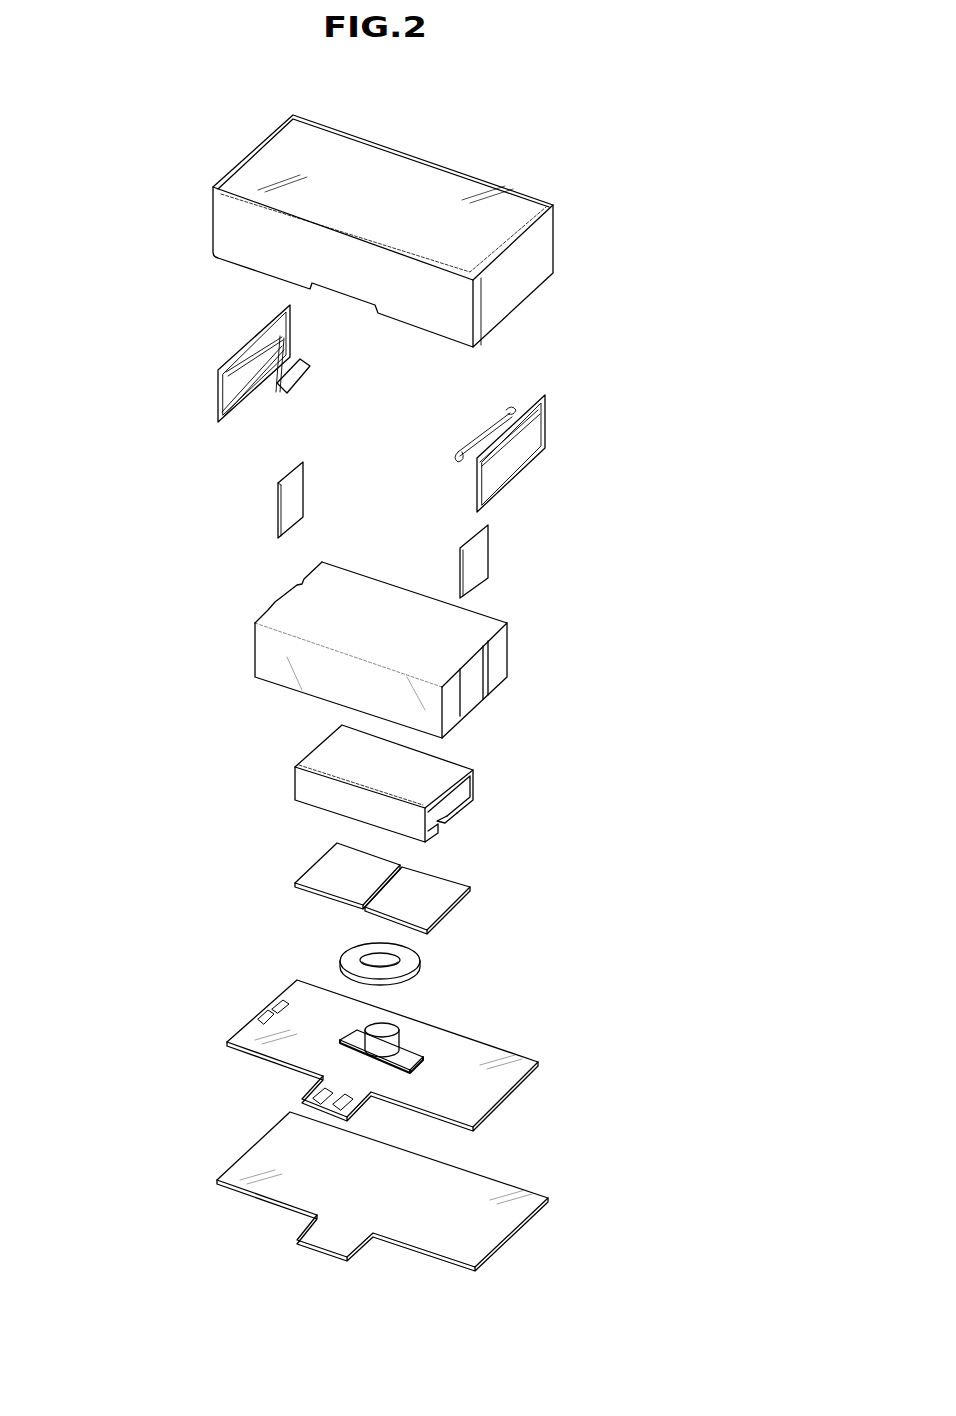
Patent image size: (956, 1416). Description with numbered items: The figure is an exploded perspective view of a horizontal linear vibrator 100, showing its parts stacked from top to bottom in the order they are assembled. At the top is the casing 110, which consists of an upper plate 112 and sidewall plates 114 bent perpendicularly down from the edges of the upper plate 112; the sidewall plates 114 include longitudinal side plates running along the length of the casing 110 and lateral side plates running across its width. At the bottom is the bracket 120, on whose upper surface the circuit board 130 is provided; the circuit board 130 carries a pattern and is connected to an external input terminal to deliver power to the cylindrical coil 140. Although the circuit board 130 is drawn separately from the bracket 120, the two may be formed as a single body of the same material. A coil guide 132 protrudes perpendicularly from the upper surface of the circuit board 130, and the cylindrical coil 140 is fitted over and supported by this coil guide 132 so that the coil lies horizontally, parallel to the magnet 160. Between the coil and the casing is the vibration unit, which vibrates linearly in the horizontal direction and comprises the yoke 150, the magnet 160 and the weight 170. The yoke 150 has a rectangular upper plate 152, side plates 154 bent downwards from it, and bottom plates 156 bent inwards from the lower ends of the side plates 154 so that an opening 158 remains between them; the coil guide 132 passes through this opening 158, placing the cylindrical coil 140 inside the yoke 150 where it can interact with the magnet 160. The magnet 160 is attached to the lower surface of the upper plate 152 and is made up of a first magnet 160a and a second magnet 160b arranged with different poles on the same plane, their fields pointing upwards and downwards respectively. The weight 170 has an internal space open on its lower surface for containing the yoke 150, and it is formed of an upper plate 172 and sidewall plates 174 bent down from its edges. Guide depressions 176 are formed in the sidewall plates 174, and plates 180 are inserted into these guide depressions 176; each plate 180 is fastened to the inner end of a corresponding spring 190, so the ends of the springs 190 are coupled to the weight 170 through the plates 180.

The horizontal linear vibrator 100 is at (146, 137).
The casing 110 is at (522, 158).
The upper plate 112 is at (417, 183).
The sidewall plates 114 is at (537, 255).
The bracket 120 is at (493, 1228).
The circuit board 130 is at (490, 1093).
The coil guide 132 is at (398, 1030).
The cylindrical coil 140 is at (420, 968).
The yoke 150 is at (278, 763).
The upper plate 152 is at (442, 768).
The side plates 154 is at (474, 787).
The bottom plates 156 is at (458, 806).
The opening 158 is at (440, 822).
The magnet 160 is at (215, 858).
The first magnet 160a is at (323, 873).
The second magnet 160b is at (390, 905).
The weight 170 is at (260, 582).
The upper plate 172 is at (372, 610).
The sidewall plates 174 is at (500, 657).
The guide depressions 176 is at (473, 680).
The plates 180 is at (480, 557).
The springs 190 is at (545, 418).